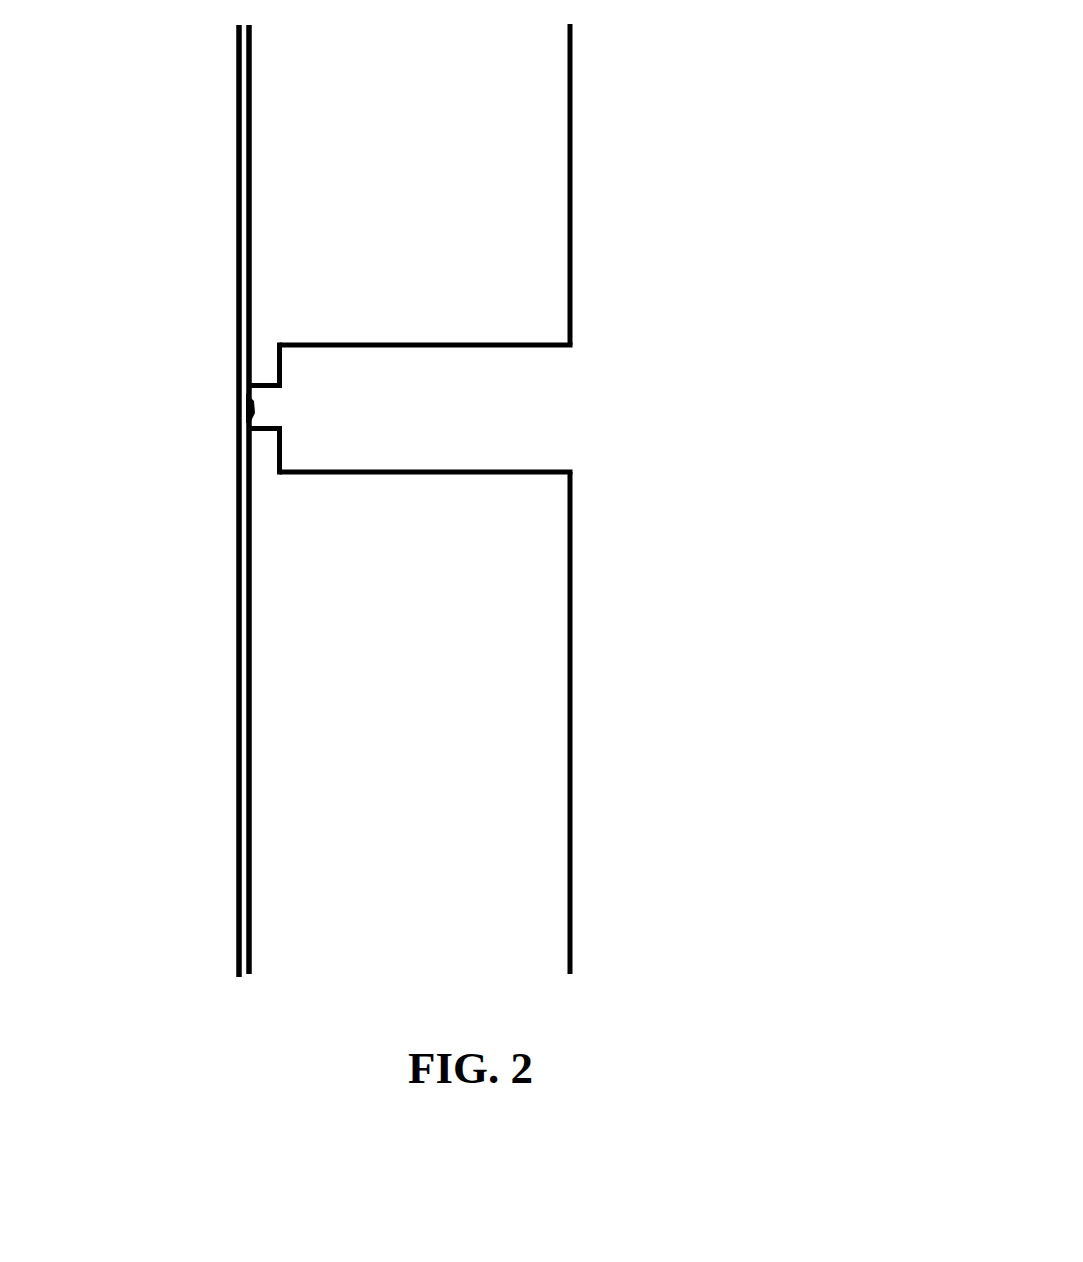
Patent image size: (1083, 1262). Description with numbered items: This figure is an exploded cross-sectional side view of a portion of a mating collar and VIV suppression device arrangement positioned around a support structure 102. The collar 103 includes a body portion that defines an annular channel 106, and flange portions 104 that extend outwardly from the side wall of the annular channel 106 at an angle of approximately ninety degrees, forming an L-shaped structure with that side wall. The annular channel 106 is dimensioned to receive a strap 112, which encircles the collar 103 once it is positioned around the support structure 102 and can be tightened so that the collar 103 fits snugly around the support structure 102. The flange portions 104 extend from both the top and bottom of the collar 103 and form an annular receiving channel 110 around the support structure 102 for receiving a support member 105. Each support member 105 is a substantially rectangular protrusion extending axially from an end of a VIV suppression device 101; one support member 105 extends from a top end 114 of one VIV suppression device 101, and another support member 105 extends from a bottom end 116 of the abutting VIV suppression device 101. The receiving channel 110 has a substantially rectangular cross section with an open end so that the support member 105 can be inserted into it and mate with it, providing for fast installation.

The VIV suppression device 101 is at (596, 176).
The support structure 102 is at (175, 386).
The collar 103 is at (357, 388).
The flange portions 104 is at (303, 367).
The support member 105 is at (278, 350).
The annular channel 106 is at (289, 417).
The receiving channel 110 is at (226, 360).
The strap 112 is at (221, 410).
The top end 114 is at (525, 506).
The bottom end 116 is at (549, 278).